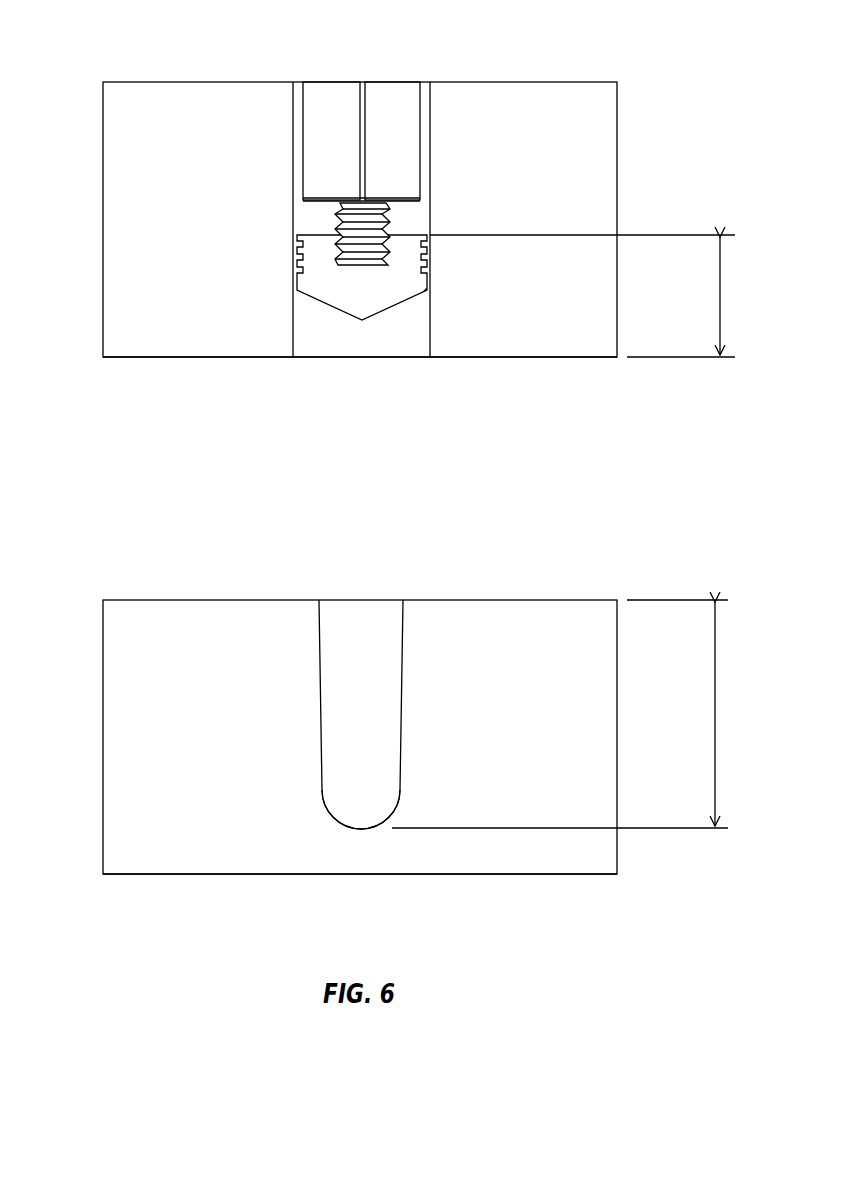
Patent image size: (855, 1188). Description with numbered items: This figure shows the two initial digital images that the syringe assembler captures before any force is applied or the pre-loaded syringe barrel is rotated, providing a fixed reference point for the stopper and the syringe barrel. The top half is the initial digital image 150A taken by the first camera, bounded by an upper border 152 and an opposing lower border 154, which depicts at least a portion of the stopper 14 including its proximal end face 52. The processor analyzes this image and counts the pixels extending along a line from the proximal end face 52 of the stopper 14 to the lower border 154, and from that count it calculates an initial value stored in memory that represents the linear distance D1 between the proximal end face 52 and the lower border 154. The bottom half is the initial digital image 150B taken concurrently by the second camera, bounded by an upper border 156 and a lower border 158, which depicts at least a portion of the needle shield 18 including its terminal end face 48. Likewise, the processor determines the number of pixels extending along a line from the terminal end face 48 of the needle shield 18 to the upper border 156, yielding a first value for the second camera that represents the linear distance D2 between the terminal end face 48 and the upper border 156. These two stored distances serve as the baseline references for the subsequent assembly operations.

The upper border 152 is at (488, 82).
The lower border 154 is at (462, 357).
The stopper 14 is at (317, 284).
The proximal end face 52 is at (312, 235).
The initial digital image 150A is at (617, 285).
The linear distance D1 is at (720, 293).
The upper border 156 is at (448, 600).
The lower border 158 is at (502, 874).
The needle shield 18 is at (347, 713).
The terminal end face 48 is at (358, 829).
The initial digital image 150B is at (617, 695).
The linear distance D2 is at (715, 715).